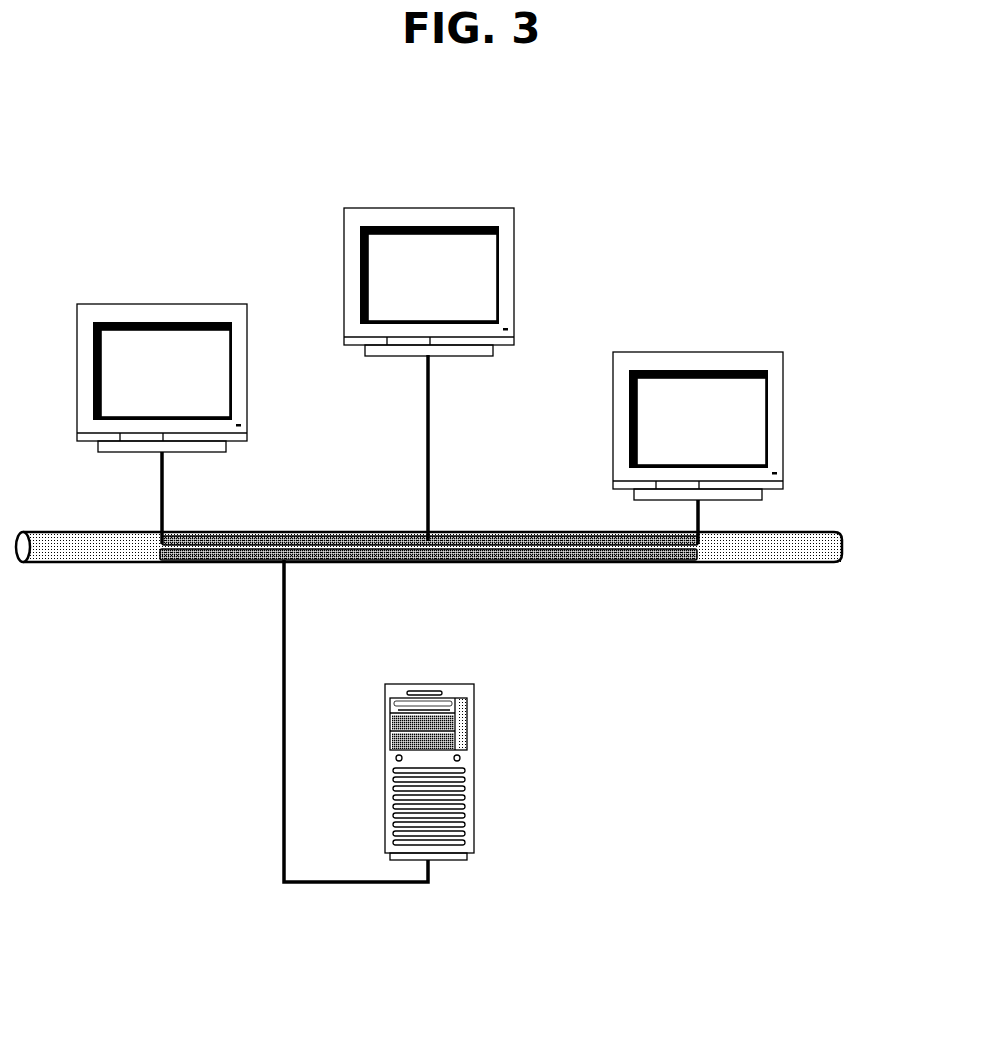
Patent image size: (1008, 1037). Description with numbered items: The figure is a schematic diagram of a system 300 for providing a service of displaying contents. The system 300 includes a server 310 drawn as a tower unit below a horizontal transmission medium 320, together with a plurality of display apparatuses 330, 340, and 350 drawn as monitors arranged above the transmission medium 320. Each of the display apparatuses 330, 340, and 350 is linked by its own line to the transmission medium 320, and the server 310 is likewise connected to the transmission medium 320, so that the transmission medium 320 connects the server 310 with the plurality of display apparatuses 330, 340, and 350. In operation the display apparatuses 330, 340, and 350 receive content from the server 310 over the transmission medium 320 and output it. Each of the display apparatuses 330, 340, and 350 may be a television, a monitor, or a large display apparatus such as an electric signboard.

The system 300 is at (70, 125).
The server 310 is at (474, 770).
The transmission medium 320 is at (843, 536).
The display apparatus 330 is at (162, 304).
The display apparatus 340 is at (428, 208).
The display apparatus 350 is at (697, 352).